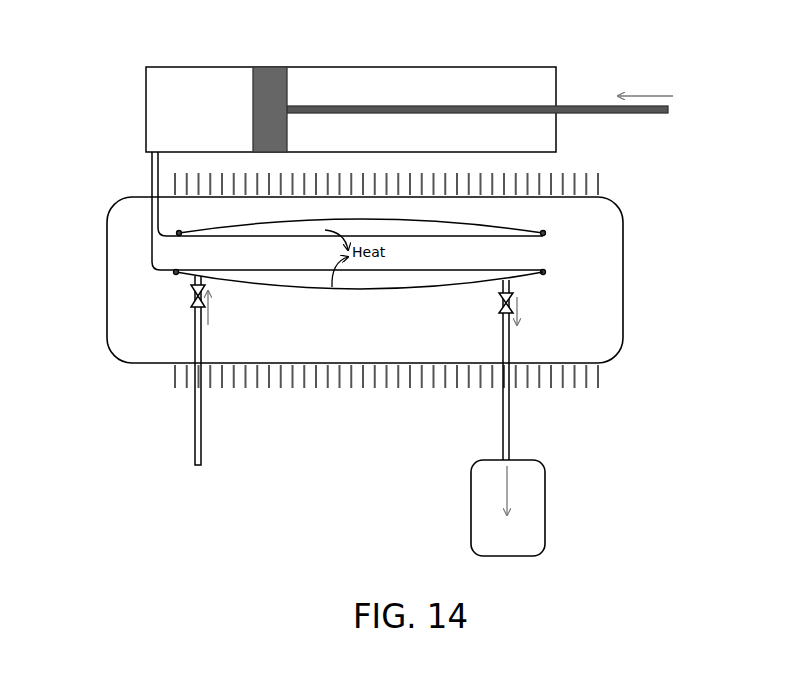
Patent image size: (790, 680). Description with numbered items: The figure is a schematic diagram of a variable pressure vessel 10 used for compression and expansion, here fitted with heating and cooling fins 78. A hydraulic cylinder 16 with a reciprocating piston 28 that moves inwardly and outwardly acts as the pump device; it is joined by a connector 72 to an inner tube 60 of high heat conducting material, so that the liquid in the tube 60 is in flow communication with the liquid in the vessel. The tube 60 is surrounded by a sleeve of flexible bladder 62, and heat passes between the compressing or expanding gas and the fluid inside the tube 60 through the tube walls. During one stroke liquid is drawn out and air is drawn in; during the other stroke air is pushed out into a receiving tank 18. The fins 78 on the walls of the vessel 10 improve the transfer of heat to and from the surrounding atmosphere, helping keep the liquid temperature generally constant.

The variable pressure vessel 10 is at (613, 362).
The hydraulic cylinder 16 is at (528, 67).
The receiving tank 18 is at (541, 508).
The reciprocating piston 28 is at (288, 77).
The tube 60 is at (402, 270).
The flexible bladder 62 is at (323, 290).
The connector 72 is at (152, 224).
The fins 78 is at (603, 180).